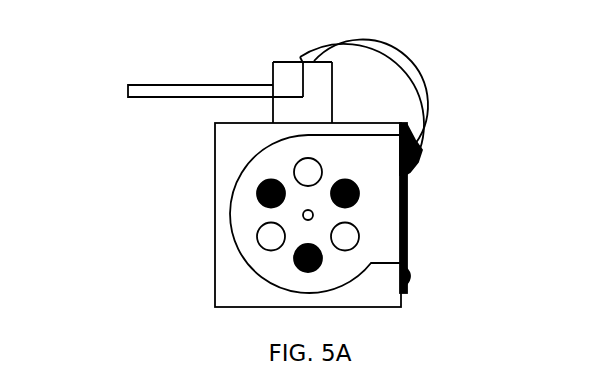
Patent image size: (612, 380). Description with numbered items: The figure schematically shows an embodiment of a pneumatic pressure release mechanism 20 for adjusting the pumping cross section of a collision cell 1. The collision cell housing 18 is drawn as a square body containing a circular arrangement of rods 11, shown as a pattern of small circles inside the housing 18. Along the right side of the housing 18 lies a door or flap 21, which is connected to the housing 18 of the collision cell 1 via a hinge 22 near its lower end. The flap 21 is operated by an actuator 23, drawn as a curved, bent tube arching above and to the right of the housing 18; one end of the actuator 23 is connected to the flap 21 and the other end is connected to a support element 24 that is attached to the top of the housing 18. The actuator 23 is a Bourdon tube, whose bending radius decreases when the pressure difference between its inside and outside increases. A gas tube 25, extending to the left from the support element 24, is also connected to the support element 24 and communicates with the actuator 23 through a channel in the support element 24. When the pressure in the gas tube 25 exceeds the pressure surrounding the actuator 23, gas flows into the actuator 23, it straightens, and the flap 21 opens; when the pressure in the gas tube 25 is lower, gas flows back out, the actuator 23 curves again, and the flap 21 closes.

The collision cell 1 is at (287, 161).
The rods 11 is at (294, 260).
The collision cell housing 18 is at (215, 165).
The mechanism 20 is at (411, 90).
The flap 21 is at (407, 222).
The hinge 22 is at (409, 280).
The actuator 23 is at (447, 65).
The support element 24 is at (332, 90).
The gas tube 25 is at (182, 85).